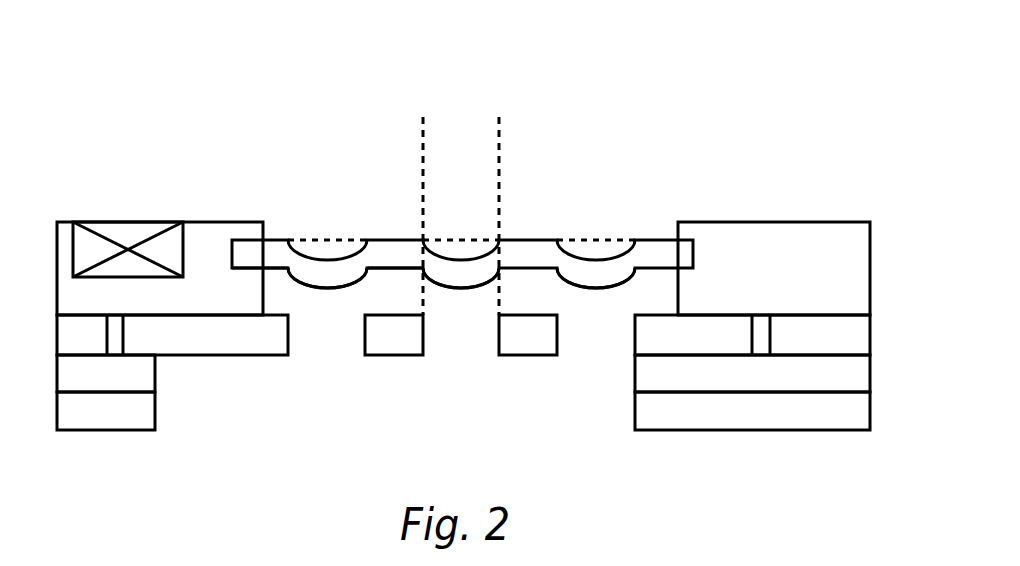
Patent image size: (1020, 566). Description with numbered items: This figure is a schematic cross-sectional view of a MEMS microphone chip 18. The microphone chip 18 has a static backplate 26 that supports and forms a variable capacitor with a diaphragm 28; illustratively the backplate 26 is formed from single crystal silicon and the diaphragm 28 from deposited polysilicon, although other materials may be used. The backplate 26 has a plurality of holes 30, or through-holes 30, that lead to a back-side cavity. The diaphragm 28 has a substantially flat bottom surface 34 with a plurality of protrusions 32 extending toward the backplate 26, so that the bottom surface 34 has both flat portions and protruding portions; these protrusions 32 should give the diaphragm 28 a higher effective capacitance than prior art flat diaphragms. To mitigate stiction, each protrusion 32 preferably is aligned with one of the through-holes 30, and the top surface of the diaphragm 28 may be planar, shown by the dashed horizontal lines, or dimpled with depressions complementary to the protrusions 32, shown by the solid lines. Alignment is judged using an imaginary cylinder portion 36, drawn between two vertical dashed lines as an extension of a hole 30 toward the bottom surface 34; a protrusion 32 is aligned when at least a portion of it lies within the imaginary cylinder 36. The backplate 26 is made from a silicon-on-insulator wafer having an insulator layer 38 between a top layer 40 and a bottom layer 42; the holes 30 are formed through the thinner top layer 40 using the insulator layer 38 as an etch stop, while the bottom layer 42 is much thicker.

The MEMS microphone chip 18 is at (761, 58).
The backplate 26 is at (243, 357).
The diaphragm 28 is at (392, 253).
The holes 30 is at (308, 344).
The protrusions 32 is at (344, 302).
The bottom surface 34 is at (275, 287).
The imaginary cylinder portion 36 is at (478, 164).
The insulator layer 38 is at (76, 376).
The top layer 40 is at (76, 344).
The bottom layer 42 is at (76, 408).